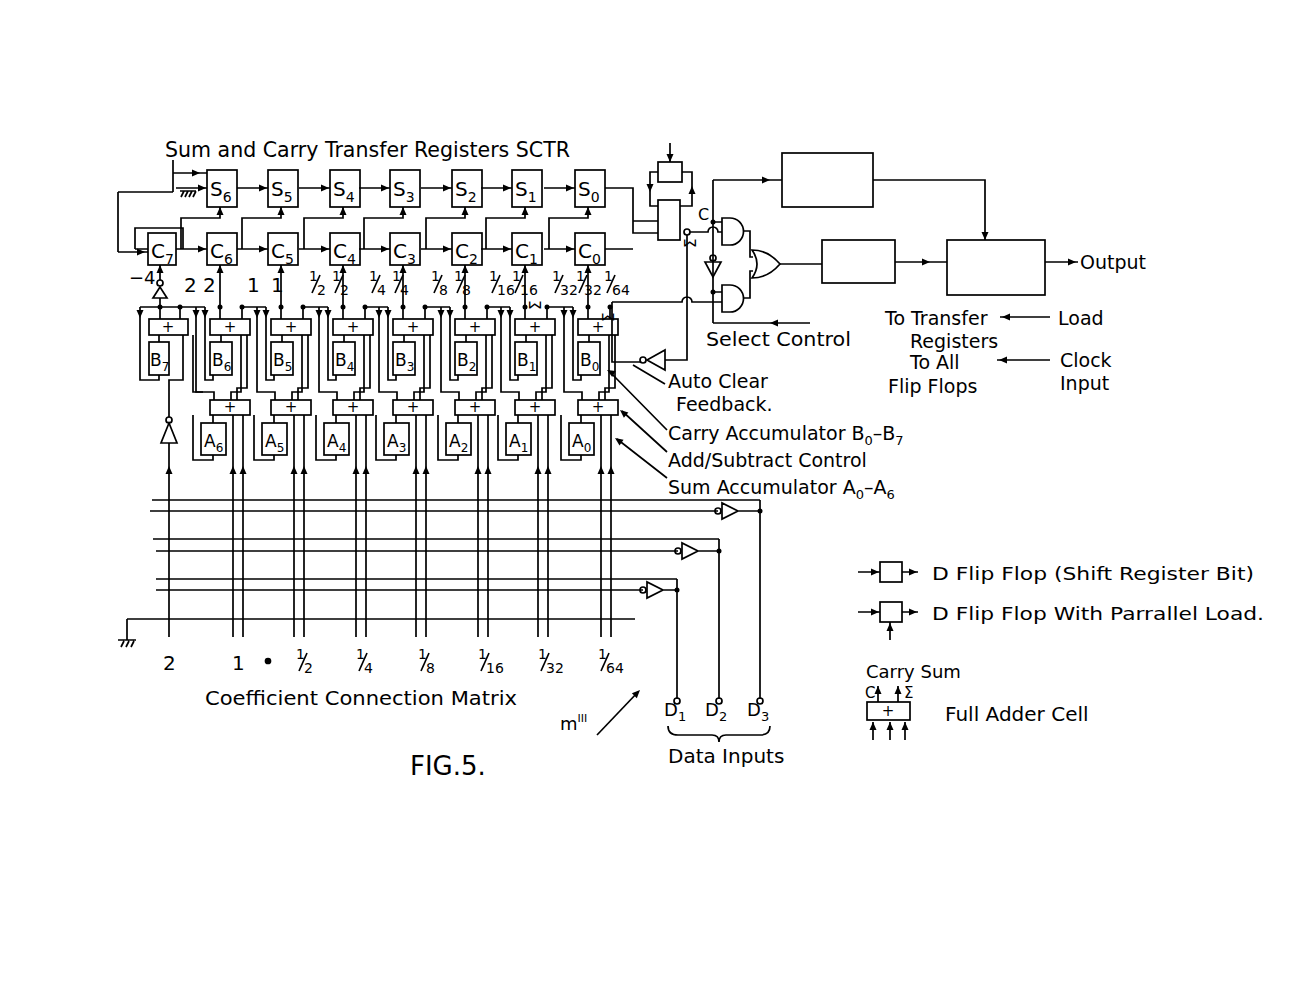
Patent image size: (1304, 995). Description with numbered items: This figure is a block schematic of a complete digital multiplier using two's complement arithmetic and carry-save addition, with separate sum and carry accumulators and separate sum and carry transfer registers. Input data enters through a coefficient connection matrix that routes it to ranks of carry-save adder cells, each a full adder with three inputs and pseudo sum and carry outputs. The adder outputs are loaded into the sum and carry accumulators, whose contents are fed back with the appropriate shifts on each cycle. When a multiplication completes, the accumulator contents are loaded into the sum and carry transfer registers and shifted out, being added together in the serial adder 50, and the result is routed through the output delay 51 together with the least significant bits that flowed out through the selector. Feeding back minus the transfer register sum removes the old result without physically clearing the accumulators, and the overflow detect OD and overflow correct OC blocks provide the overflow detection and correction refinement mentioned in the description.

The serial adder 50 is at (668, 198).
The output delay 51 is at (880, 240).
The overflow detect OD is at (843, 153).
The overflow correct OC is at (1012, 240).